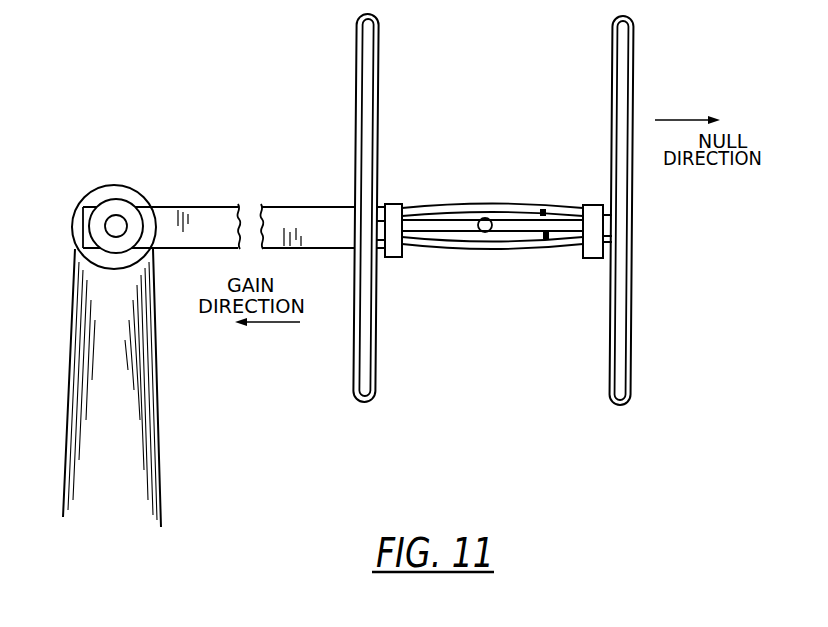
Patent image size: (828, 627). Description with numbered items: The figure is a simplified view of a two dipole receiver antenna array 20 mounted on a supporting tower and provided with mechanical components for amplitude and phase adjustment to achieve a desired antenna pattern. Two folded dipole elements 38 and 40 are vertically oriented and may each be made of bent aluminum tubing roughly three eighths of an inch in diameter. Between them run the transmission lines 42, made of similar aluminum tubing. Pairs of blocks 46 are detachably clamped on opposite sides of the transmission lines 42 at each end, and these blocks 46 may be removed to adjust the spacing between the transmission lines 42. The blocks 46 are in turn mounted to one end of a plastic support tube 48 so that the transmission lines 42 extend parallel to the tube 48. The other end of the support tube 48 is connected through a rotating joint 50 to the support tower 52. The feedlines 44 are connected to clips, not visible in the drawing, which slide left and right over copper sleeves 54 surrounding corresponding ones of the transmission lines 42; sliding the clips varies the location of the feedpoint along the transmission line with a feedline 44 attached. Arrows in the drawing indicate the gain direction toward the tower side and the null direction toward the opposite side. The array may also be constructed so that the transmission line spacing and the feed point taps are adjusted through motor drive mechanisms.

The antenna assembly 20 is at (288, 110).
The folded dipole element 38 is at (628, 362).
The folded dipole element 40 is at (352, 379).
The transmission lines 42 is at (477, 186).
The feedlines 44 is at (572, 98).
The blocks 46 is at (406, 176).
The plastic support tube 48 is at (213, 237).
The rotating joint 50 is at (116, 199).
The support tower 52 is at (136, 383).
The copper sleeves 54 is at (540, 207).